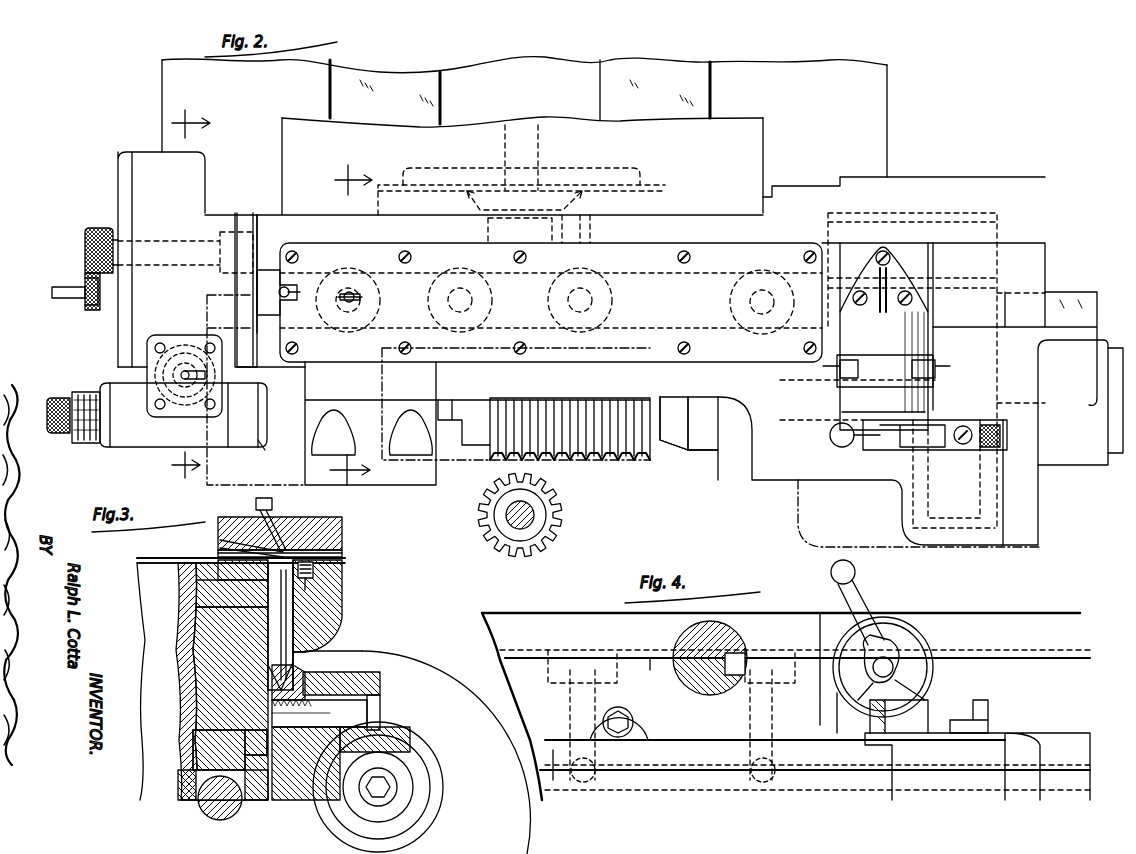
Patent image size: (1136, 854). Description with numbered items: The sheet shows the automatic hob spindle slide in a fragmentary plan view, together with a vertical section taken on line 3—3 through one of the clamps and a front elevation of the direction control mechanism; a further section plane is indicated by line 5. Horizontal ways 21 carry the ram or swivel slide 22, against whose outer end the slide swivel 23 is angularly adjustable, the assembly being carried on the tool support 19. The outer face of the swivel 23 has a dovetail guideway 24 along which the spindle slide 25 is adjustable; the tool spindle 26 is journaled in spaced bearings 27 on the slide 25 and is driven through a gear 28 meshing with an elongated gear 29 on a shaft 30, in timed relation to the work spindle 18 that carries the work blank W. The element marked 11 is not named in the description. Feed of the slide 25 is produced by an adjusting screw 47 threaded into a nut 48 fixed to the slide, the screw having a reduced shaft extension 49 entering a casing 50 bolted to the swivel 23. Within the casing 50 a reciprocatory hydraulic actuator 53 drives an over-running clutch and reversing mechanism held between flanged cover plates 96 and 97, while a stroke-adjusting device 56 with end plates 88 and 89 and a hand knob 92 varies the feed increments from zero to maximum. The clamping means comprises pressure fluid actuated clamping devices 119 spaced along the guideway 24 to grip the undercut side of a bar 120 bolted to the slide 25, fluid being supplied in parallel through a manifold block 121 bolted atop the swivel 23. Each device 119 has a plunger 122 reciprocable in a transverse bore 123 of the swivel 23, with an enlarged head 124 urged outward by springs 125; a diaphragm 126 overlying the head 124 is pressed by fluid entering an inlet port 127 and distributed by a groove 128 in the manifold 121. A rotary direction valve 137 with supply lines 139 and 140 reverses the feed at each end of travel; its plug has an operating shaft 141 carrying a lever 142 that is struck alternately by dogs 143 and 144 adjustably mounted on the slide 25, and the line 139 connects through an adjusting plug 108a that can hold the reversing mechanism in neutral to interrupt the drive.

In FIG. 2, the ways 21 is at (605, 78).
In FIG. 2, the swivel slide 22 is at (745, 138).
In FIG. 3, the swivel slide 22 is at (150, 620).
In FIG. 2, the tool support 19 is at (727, 112).
In FIG. 2, the slide swivel 23 is at (710, 218).
In FIG. 3, the slide swivel 23 is at (205, 635).
In FIG. 4, the slide swivel 23 is at (515, 680).
In FIG. 2, the bearings 27 is at (373, 478).
In FIG. 3, the bearings 27 is at (378, 742).
In FIG. 2, the rack 11 is at (600, 463).
In FIG. 2, the work spindle 18 is at (505, 515).
In FIG. 2, the work blank W is at (572, 517).
In FIG. 2, the manifold block 121 is at (318, 250).
In FIG. 3, the manifold block 121 is at (292, 520).
In FIG. 4, the manifold block 121 is at (560, 613).
In FIG. 2, the clamping devices 119 is at (428, 303).
In FIG. 3, the clamping devices 119 is at (356, 561).
In FIG. 4, the clamping devices 119 is at (582, 648).
In FIG. 2, the adjusting screw 47 is at (418, 232).
In FIG. 3, the adjusting screw 47 is at (228, 768).
In FIG. 2, the nut 48 is at (485, 226).
In FIG. 3, the nut 48 is at (222, 750).
In FIG. 2, the inlet port 127 is at (346, 292).
In FIG. 3, the inlet port 127 is at (262, 520).
In FIG. 2, the supply line 140 is at (312, 300).
In FIG. 2, the cover plate 96 is at (118, 165).
In FIG. 2, the cover plate 97 is at (249, 213).
In FIG. 2, the section line 5 is at (185, 290).
In FIG. 2, the section line 3— 3 is at (345, 323).
In FIG. 2, the shaft extension 49 is at (177, 241).
In FIG. 2, the casing 50 is at (140, 318).
In FIG. 2, the supply line 139 is at (74, 285).
In FIG. 2, the adjusting plug 108a is at (95, 305).
In FIG. 2, the hydraulic actuator 53 is at (147, 372).
In FIG. 2, the end plate 88 is at (108, 440).
In FIG. 2, the end plate 89 is at (260, 447).
In FIG. 2, the hand knob 92 is at (47, 403).
In FIG. 2, the stroke-adjusting device 56 is at (76, 453).
In FIG. 2, the shaft 30 is at (795, 232).
In FIG. 2, the elongated gear 29 is at (980, 210).
In FIG. 2, the direction valve 137 is at (830, 390).
In FIG. 4, the direction valve 137 is at (925, 625).
In FIG. 2, the lever 142 is at (853, 445).
In FIG. 4, the lever 142 is at (858, 592).
In FIG. 2, the gear 28 is at (985, 505).
In FIG. 2, the tool spindle 26 is at (660, 430).
In FIG. 3, the tool spindle 26 is at (378, 785).
In FIG. 2, the spindle slide 25 is at (704, 468).
In FIG. 3, the spindle slide 25 is at (362, 672).
In FIG. 4, the spindle slide 25 is at (553, 770).
In FIG. 3, the enlarged head 124 is at (178, 575).
In FIG. 3, the transverse bore 123 is at (180, 605).
In FIG. 3, the groove 128 is at (255, 545).
In FIG. 4, the groove 128 is at (692, 640).
In FIG. 3, the diaphragm 126 is at (255, 553).
In FIG. 4, the diaphragm 126 is at (650, 660).
In FIG. 3, the plunger 122 is at (342, 600).
In FIG. 4, the plunger 122 is at (568, 703).
In FIG. 3, the springs 125 is at (342, 580).
In FIG. 3, the bar 120 is at (278, 690).
In FIG. 3, the dovetail guideway 24 is at (325, 655).
In FIG. 4, the operating shaft 141 is at (890, 667).
In FIG. 4, the dog 143 is at (890, 728).
In FIG. 4, the dog 144 is at (985, 713).